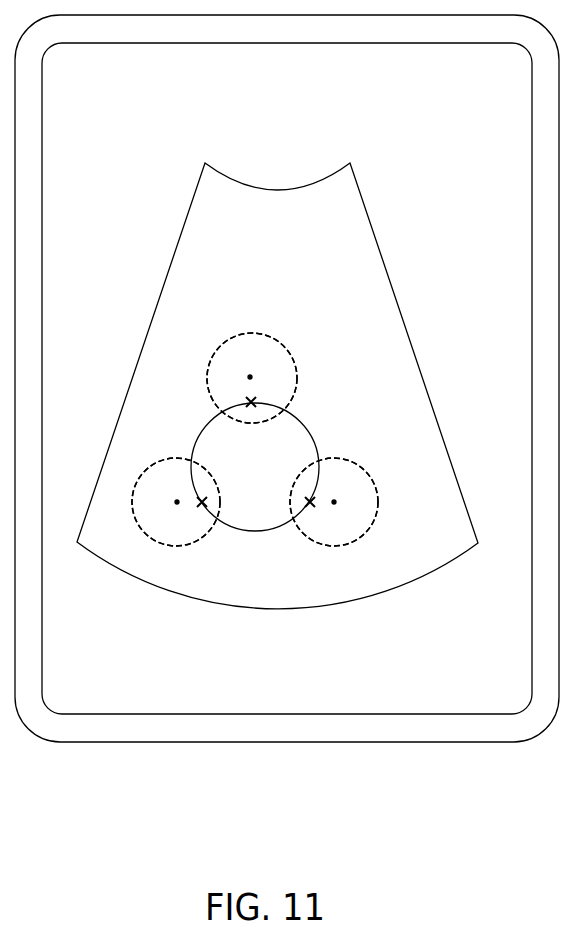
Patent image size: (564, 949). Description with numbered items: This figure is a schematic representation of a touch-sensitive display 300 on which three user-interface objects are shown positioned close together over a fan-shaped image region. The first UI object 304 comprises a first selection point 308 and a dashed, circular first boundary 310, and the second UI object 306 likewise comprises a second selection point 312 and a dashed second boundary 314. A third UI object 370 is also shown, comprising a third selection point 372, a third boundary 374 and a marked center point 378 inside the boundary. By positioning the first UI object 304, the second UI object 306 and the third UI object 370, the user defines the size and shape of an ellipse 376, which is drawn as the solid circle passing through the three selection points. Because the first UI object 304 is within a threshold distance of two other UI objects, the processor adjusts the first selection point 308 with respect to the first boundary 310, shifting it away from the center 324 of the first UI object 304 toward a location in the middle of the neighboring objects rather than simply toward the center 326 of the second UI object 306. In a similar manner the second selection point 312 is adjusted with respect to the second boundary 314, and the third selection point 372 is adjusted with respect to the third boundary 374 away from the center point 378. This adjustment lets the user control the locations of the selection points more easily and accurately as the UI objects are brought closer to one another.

The touch-sensitive display 300 is at (287, 102).
The ellipse 376 is at (270, 530).
The third UI object 370 is at (250, 320).
The third boundary 374 is at (296, 384).
The center point of top marker 378 is at (248, 376).
The third selection point 372 is at (255, 396).
The first UI object 304 is at (185, 566).
The first boundary 310 is at (148, 537).
The center of the first UI object 324 is at (175, 501).
The first selection point 308 is at (199, 499).
The second UI object 306 is at (329, 558).
The second boundary 314 is at (377, 505).
The center of the second UI object 326 is at (336, 500).
The second selection point 312 is at (312, 500).